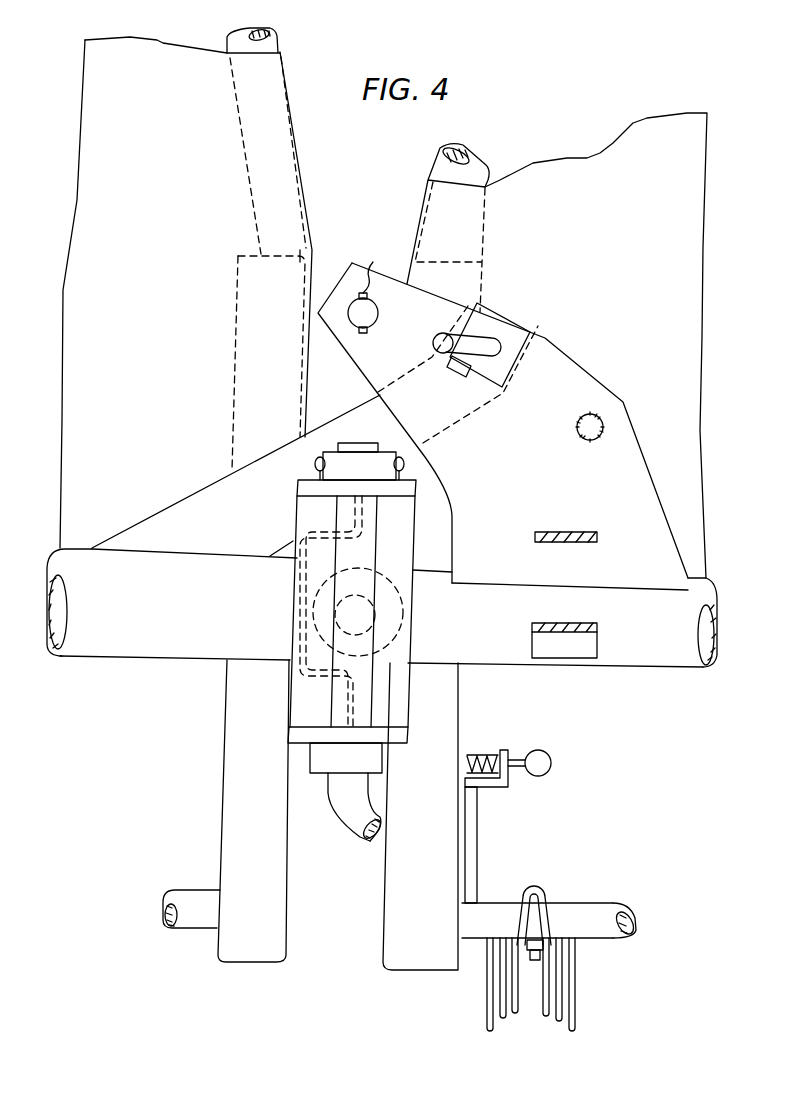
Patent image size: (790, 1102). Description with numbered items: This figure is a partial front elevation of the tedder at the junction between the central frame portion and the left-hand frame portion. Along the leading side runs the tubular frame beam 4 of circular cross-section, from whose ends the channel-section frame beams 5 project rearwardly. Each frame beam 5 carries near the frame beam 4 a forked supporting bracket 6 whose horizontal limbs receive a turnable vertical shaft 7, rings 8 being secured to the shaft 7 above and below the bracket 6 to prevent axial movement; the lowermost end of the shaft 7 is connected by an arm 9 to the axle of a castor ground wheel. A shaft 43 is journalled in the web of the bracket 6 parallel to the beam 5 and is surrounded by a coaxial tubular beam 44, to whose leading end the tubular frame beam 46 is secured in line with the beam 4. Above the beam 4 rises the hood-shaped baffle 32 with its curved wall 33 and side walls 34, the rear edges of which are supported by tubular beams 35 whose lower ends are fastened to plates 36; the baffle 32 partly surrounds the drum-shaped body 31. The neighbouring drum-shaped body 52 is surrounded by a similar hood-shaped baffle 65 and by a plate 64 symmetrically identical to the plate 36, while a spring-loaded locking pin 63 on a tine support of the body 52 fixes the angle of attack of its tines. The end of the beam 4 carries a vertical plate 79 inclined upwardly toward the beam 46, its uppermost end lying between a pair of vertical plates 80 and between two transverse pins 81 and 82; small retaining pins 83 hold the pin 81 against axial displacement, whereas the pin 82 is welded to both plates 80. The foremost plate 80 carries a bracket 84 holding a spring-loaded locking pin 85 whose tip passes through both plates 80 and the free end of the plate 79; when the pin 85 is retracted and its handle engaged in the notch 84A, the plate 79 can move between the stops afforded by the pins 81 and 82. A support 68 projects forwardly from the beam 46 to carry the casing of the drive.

The curved wall 33 is at (165, 51).
The tubular beams 35 is at (230, 44).
The hood-shaped baffle 32 is at (293, 96).
The side walls 34 is at (300, 179).
The plates 36 is at (242, 331).
The hood-shaped baffle 65 is at (690, 116).
The transverse retaining pins 83 is at (373, 268).
The pin 81 is at (374, 317).
The spring-loaded locking pin 85 is at (441, 335).
The notch 84A is at (480, 369).
The bracket 84 is at (513, 368).
The vertical plates 80 is at (600, 387).
The pin 82 is at (580, 438).
The plate 79 is at (203, 484).
The vertical shaft 7 is at (358, 443).
The rings 8 is at (320, 460).
The frame beams 5 is at (298, 604).
The tubular beam 44 is at (400, 598).
The shafts 43 is at (380, 637).
The frame beam 4 is at (95, 656).
The support 68 is at (568, 623).
The tubular frame beam 46 is at (648, 660).
The forked supporting bracket 6 is at (402, 716).
The spring-loaded locking pin 63 is at (540, 776).
The arms 9 is at (352, 835).
The plate 64 is at (387, 917).
The drum-shaped body 31 is at (181, 935).
The drum-shaped body 52 is at (610, 900).